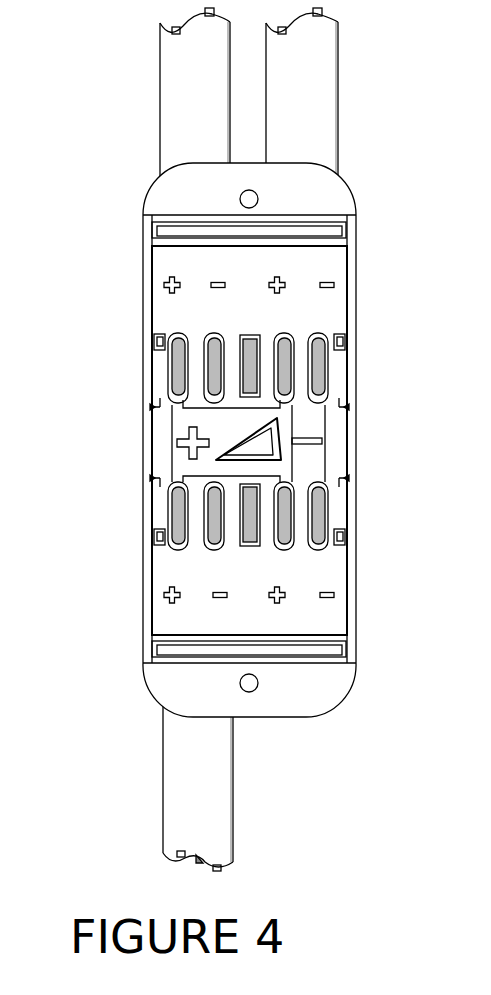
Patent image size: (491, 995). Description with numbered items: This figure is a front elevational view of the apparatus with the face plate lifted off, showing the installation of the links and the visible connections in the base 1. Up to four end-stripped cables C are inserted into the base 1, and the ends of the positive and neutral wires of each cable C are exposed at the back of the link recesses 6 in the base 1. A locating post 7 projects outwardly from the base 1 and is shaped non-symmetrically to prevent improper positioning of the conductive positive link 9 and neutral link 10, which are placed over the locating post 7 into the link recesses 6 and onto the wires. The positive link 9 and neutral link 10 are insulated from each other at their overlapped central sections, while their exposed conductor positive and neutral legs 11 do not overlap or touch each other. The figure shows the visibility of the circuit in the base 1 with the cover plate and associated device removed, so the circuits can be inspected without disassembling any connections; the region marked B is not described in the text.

The base 1 is at (339, 612).
The link recesses 6 is at (288, 507).
The locating post 7 is at (265, 447).
The positive link 9 is at (178, 460).
The neutral link 10 is at (318, 428).
The positive and neutral legs 11 is at (283, 355).
The terminal block B is at (145, 386).
The cables C is at (288, 122).